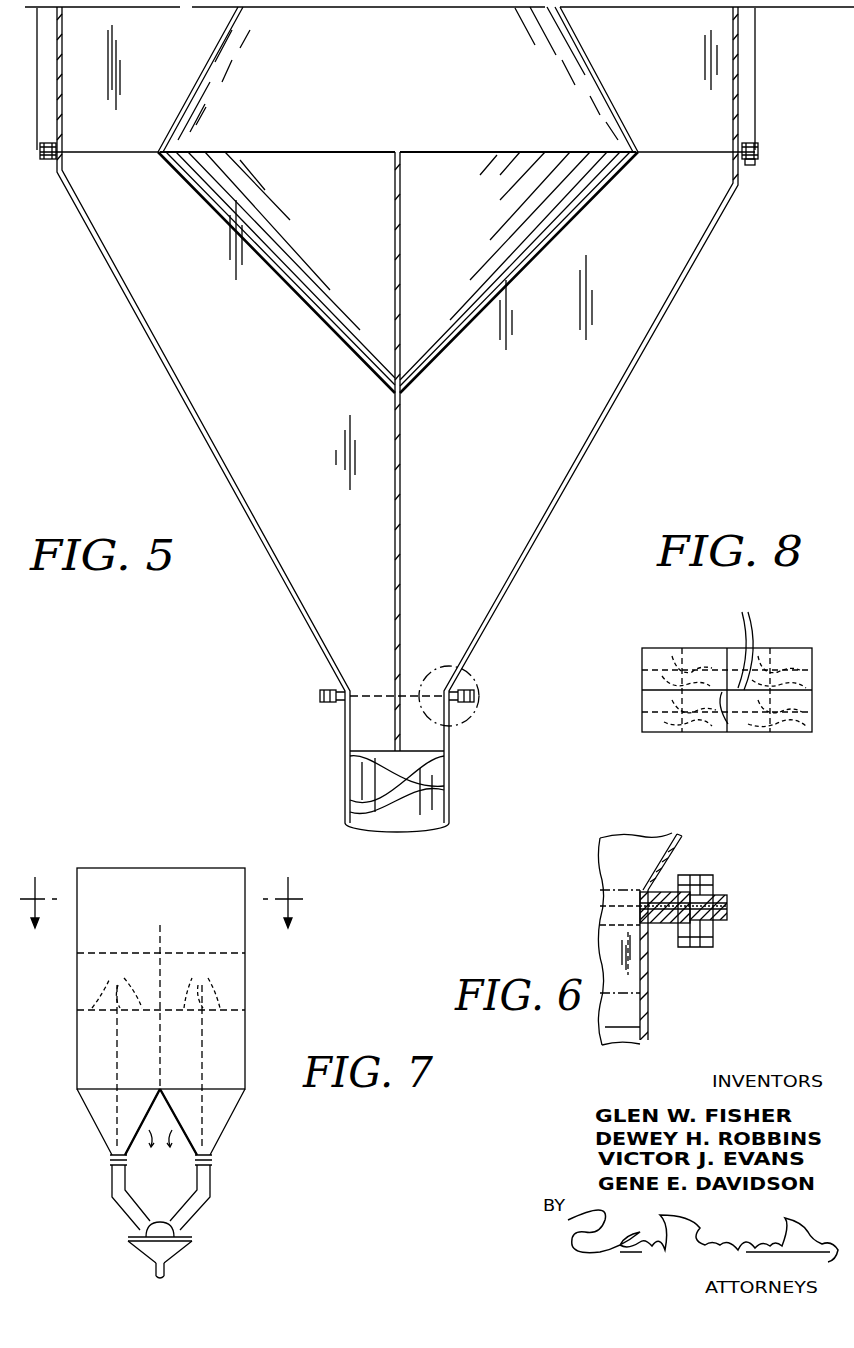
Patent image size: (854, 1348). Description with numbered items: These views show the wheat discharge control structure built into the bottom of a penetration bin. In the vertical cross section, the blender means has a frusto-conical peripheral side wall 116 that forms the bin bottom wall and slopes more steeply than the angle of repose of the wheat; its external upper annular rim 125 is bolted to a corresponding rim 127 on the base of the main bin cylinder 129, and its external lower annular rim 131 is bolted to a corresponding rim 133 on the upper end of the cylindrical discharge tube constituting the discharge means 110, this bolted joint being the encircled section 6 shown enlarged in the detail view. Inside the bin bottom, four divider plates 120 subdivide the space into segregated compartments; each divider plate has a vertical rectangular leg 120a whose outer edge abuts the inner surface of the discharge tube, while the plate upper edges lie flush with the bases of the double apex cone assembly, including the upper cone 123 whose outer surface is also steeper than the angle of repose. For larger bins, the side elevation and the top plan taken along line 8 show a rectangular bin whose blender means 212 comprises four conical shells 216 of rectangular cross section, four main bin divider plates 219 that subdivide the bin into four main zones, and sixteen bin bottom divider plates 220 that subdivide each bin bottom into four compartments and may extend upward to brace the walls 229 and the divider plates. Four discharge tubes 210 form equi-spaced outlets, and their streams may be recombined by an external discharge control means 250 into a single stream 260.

In FIG. 5, the encircled section 6 is at (470, 672).
In FIG. 7, the section line 8— 8 is at (166, 902).
In FIG. 6, the discharge means 110 is at (650, 1020).
In FIG. 5, the peripheral side wall 116 is at (630, 378).
In FIG. 6, the peripheral side wall 116 is at (680, 844).
In FIG. 5, the divider plates 120 is at (284, 432).
In FIG. 6, the divider plates 120 is at (630, 846).
In FIG. 6, the vertical rectangular leg 120a is at (612, 942).
In FIG. 5, the upper cone 123 is at (228, 85).
In FIG. 5, the external upper annular rim 125 is at (757, 141).
In FIG. 5, the rim 127 is at (752, 160).
In FIG. 5, the main bin cylinder 129 is at (740, 74).
In FIG. 6, the external lower annular rim 131 is at (665, 890).
In FIG. 6, the rim 133 is at (727, 916).
In FIG. 8, the discharge means 210 is at (668, 652).
In FIG. 7, the discharge means 210 is at (195, 1190).
In FIG. 7, the blender means 212 is at (160, 1151).
In FIG. 7, the conical shells 216 is at (97, 1125).
In FIG. 8, the main bin divider plates 219 is at (818, 708).
In FIG. 7, the main bin divider plates 219 is at (88, 952).
In FIG. 8, the bin bottom divider plates 220 is at (742, 658).
In FIG. 7, the bin bottom divider plates 220 is at (156, 1053).
In FIG. 8, the walls 229 is at (815, 656).
In FIG. 7, the walls 229 is at (246, 985).
In FIG. 8, the external discharge control means 250 is at (716, 734).
In FIG. 7, the external discharge control means 250 is at (190, 1254).
In FIG. 7, the single stream 260 is at (155, 1269).